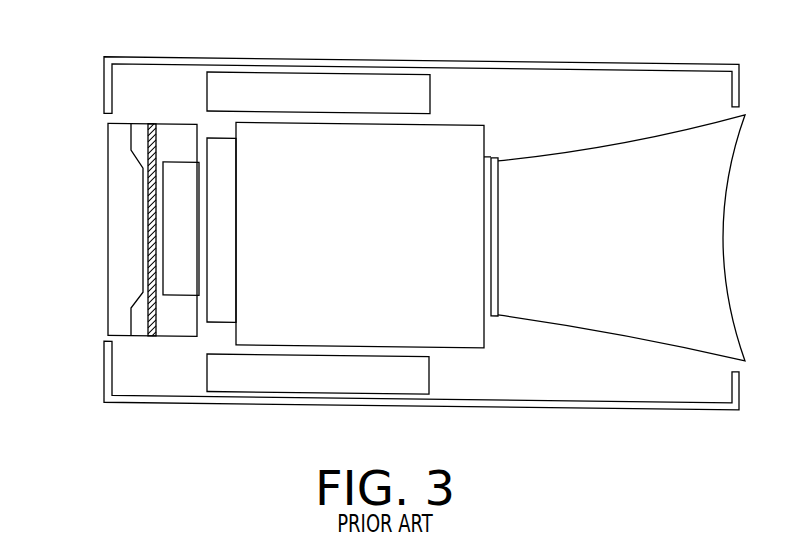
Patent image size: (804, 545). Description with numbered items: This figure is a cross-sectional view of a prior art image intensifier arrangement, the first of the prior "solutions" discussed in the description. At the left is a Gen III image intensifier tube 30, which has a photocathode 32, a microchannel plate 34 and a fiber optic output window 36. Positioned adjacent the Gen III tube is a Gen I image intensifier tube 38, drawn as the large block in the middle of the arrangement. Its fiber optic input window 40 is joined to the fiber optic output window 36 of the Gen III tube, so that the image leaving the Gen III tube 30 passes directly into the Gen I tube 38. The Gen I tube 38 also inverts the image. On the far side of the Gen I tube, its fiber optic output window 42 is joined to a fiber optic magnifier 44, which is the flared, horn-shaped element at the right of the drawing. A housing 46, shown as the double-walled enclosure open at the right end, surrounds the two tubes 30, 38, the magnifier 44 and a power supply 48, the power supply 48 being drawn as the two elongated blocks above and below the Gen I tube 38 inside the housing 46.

The Gen III image intensifier tube 30 is at (156, 335).
The photocathode 32 is at (118, 153).
The microchannel plate 34 is at (150, 210).
The fiber optic output window 36 is at (173, 255).
The Gen I image intensifier tube 38 is at (473, 336).
The fiber optic input window 40 is at (224, 145).
The fiber optic output window 42 is at (490, 152).
The fiber optic magnifier 44 is at (717, 169).
The housing 46 is at (740, 400).
The power supply 48 is at (391, 83).